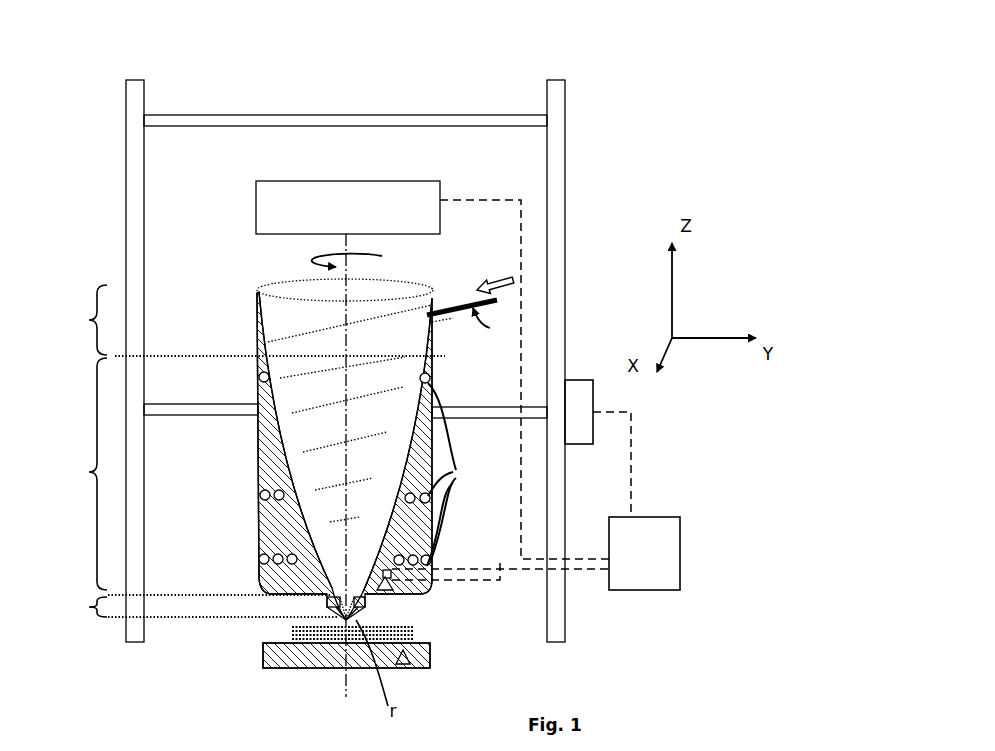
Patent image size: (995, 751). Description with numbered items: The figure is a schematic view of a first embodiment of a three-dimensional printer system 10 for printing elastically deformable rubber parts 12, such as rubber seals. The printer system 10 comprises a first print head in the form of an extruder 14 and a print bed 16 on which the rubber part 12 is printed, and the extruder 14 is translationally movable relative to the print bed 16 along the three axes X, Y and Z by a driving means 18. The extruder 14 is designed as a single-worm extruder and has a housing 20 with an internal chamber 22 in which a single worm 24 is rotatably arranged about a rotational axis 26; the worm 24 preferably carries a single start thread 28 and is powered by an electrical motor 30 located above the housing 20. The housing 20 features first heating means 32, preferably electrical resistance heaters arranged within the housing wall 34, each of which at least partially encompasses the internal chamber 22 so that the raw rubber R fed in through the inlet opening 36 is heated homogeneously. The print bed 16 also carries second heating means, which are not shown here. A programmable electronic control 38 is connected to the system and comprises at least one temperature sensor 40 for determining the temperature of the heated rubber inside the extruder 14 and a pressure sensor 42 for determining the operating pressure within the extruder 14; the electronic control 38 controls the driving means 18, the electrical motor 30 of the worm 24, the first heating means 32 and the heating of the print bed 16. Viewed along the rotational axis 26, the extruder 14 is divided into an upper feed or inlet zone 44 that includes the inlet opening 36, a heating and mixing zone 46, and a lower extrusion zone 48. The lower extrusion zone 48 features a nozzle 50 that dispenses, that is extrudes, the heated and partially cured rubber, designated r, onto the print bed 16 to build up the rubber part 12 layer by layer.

The 3D-printer system 10 is at (614, 108).
The rubber part 12 is at (290, 631).
The extruder 14 is at (247, 368).
The print bed 16 is at (283, 655).
The driving means 18 is at (578, 395).
The housing 20 is at (258, 395).
The internal chamber 22 is at (310, 430).
The worm 24 is at (344, 354).
The rotational axis 26 is at (343, 678).
The single start thread 28 is at (402, 333).
The electrical motor 30 is at (348, 207).
The first heating means 32 is at (453, 474).
The housing wall 34 is at (262, 472).
The inlet opening 36 is at (456, 300).
The electronic control 38 is at (536, 395).
The temperature sensor 40 is at (470, 610).
The pressure sensor 42 is at (385, 568).
The inlet zone 44 is at (246, 320).
The heating and mixing zone 46 is at (77, 474).
The extrusion zone 48 is at (192, 606).
The nozzle 50 is at (358, 617).